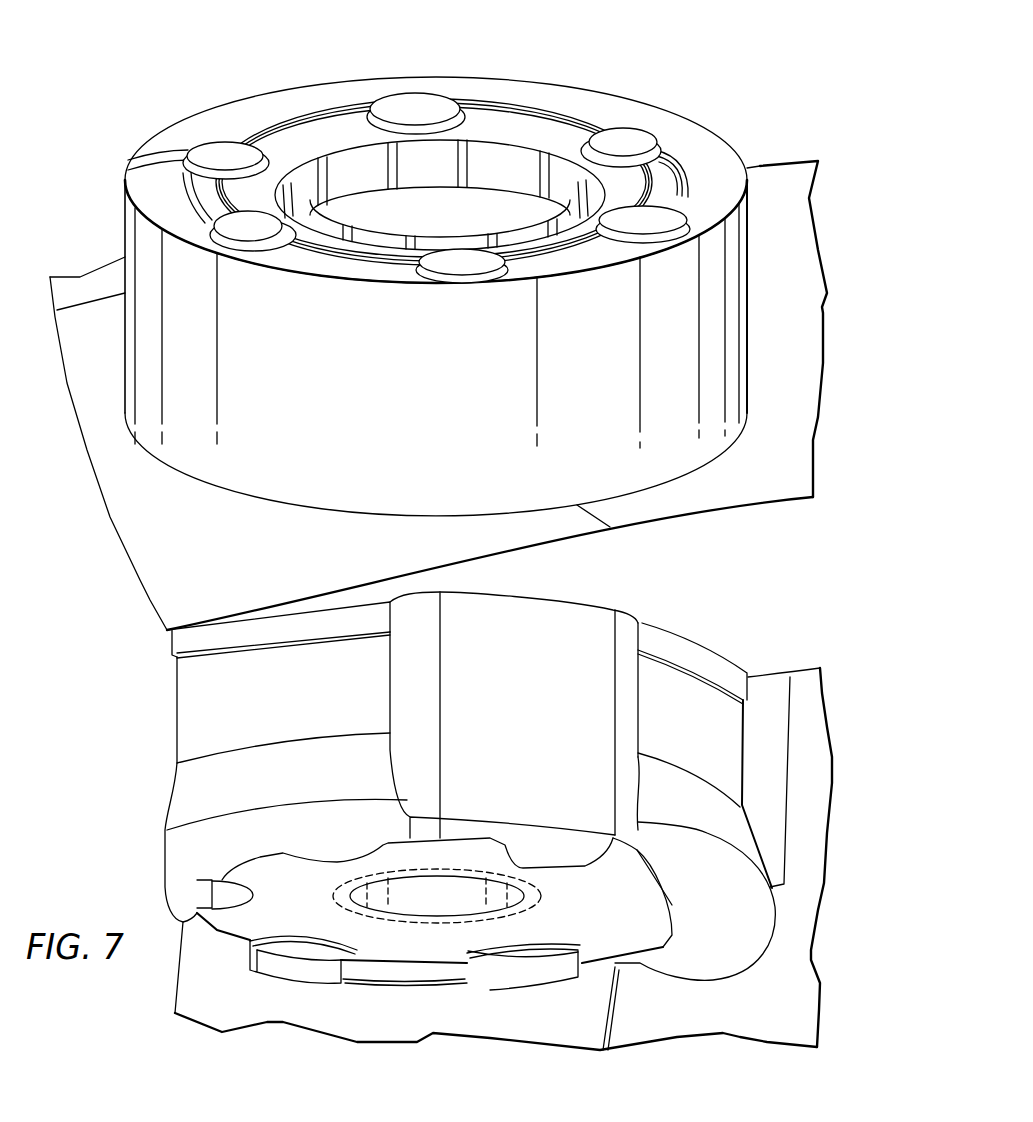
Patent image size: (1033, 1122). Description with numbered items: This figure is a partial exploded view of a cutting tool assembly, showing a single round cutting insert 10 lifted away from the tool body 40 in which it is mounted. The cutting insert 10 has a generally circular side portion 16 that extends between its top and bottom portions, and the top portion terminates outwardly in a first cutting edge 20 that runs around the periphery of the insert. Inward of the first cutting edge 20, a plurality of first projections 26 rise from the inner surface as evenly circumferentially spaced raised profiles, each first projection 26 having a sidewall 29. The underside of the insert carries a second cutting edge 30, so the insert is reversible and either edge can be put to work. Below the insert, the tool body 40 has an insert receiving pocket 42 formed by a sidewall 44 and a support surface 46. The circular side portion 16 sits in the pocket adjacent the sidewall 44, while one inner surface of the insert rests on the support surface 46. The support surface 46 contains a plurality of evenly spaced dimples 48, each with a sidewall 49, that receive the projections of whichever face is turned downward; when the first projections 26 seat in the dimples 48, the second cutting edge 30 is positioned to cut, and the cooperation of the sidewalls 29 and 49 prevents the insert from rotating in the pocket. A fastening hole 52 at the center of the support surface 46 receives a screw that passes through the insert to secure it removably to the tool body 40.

The cutting insert 10 is at (704, 72).
The circular side portion 16 is at (124, 224).
The first cutting edge 20 is at (390, 78).
The first projections 26 is at (214, 146).
The sidewall of first projection 29 is at (357, 113).
The second cutting edge 30 is at (312, 507).
The tool body 40 is at (100, 566).
The insert receiving pocket 42 is at (193, 723).
The sidewall 44 is at (190, 797).
The support surface 46 is at (427, 947).
The dimples 48 is at (340, 853).
The sidewall of dimple 49 is at (222, 882).
The fastening hole 52 is at (450, 910).